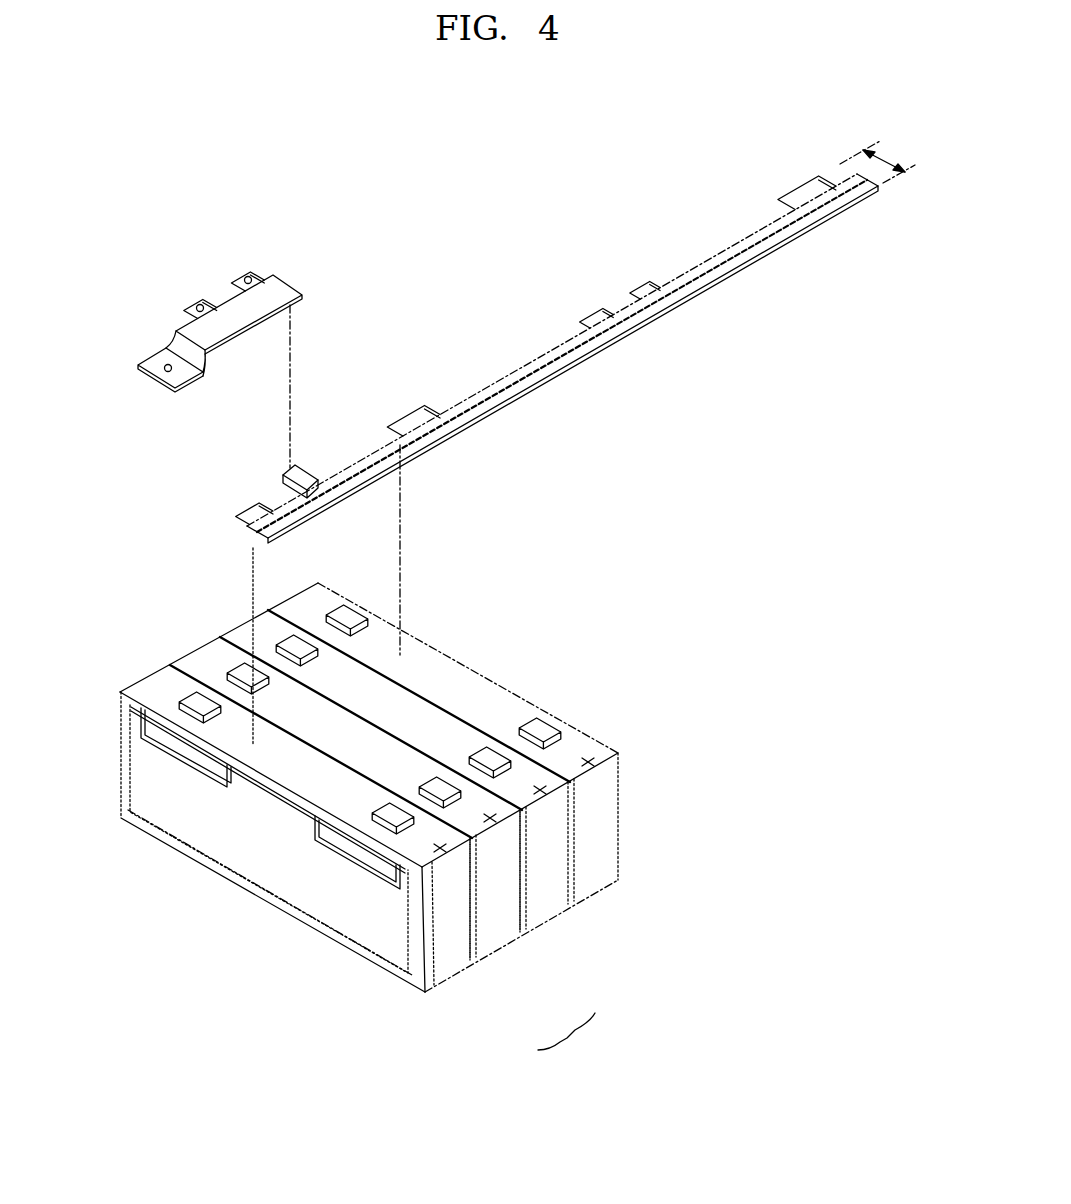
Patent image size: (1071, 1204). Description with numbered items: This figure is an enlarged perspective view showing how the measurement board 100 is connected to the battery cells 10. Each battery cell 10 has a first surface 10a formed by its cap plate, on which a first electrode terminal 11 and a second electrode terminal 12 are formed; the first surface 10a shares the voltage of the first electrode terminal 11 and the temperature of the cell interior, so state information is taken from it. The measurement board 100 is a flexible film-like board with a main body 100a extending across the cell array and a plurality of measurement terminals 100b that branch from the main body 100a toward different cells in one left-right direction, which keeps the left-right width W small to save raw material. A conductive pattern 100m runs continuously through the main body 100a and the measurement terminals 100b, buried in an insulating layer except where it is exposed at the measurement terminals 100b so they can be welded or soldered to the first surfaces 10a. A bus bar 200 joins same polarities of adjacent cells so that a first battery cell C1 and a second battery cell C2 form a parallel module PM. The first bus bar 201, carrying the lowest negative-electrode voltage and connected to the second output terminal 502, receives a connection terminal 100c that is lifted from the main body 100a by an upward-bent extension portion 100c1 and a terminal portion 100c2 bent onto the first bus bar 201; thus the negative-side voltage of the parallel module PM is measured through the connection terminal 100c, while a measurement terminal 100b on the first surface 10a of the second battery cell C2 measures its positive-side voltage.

The battery cell 10 is at (385, 825).
The first surface 10a is at (477, 680).
The first electrode terminal 11 is at (377, 820).
The second electrode terminal 12 is at (192, 708).
The measurement board 100 is at (520, 353).
The main body 100a is at (577, 358).
The measurement terminal 100b is at (247, 510).
The connection terminal 100c is at (293, 475).
The extension portion 100c1 is at (308, 495).
The terminal portion 100c2 is at (308, 475).
The conductive pattern 100m is at (647, 287).
The bus bar 200 is at (224, 325).
The first bus bar 201 is at (224, 325).
The second output terminal 502 is at (160, 370).
The left-right width W is at (877, 154).
The parallel module PM is at (569, 1040).
The first battery cell C1 is at (495, 938).
The second battery cell C2 is at (450, 963).